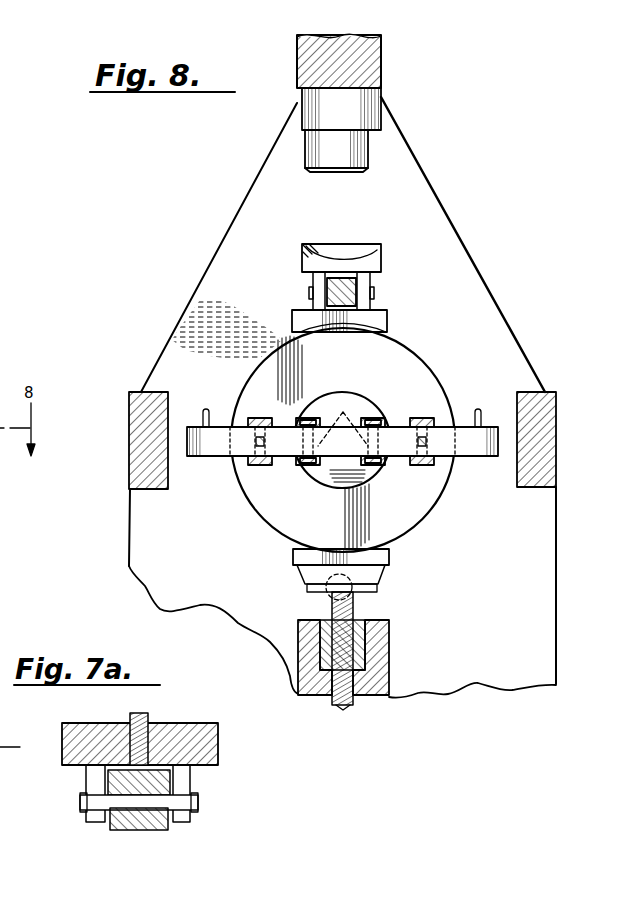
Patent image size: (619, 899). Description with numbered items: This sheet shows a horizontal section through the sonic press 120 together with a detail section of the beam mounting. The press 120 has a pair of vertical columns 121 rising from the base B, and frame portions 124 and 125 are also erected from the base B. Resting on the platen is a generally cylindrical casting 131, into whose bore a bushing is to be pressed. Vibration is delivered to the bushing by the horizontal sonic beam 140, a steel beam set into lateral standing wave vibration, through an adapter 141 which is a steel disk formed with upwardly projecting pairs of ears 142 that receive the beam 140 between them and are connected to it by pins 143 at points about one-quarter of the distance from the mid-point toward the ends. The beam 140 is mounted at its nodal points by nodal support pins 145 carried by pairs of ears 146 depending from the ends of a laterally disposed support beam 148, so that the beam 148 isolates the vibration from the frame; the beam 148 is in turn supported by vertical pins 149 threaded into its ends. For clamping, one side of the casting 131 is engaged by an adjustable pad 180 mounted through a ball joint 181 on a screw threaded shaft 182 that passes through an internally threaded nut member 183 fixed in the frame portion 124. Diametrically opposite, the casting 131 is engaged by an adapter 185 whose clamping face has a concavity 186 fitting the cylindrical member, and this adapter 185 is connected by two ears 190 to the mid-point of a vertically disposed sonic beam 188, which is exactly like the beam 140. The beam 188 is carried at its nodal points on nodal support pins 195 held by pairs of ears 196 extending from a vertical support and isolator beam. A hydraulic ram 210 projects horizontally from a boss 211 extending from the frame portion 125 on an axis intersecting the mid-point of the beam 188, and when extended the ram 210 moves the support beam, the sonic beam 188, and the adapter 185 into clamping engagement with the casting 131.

In FIG. 8, the frame portion 125 is at (382, 62).
In FIG. 8, the boss 211 is at (381, 100).
In FIG. 8, the hydraulic ram 210 is at (308, 152).
In FIG. 8, the pairs of ears 196 is at (382, 272).
In FIG. 8, the ears 190 is at (371, 292).
In FIG. 8, the sonic beam 188 is at (314, 286).
In FIG. 8, the nodal support pins 195 is at (311, 292).
In FIG. 8, the adapter 185 is at (388, 318).
In FIG. 8, the concavity 186 is at (372, 336).
In FIG. 8, the casting or machine part 131 is at (437, 512).
In FIG. 8, the adapter 141 is at (361, 392).
In FIG. 8, the sonic beam 140 is at (196, 458).
In FIG. 7a, the sonic beam 140 is at (128, 828).
In FIG. 8, the pairs of ears 146 is at (255, 417).
In FIG. 7a, the pairs of ears 146 is at (191, 780).
In FIG. 8, the nodal support pins 145 is at (426, 467).
In FIG. 7a, the nodal support pins 145 is at (199, 802).
In FIG. 8, the ears 142 is at (384, 417).
In FIG. 8, the pins 143 is at (313, 500).
In FIG. 8, the vertical legs or columns 121 is at (128, 437).
In FIG. 8, the press 120 is at (544, 392).
In FIG. 8, the adjustable pad 180 is at (390, 562).
In FIG. 8, the ball joint 181 is at (306, 596).
In FIG. 8, the screw threaded shaft 182 is at (356, 602).
In FIG. 8, the internally threaded nut member 183 is at (366, 623).
In FIG. 8, the frame portion 124 is at (386, 652).
In FIG. 8, the base B is at (440, 248).
In FIG. 7a, the support beam 148 is at (219, 742).
In FIG. 7a, the vertical pins 149 is at (142, 714).